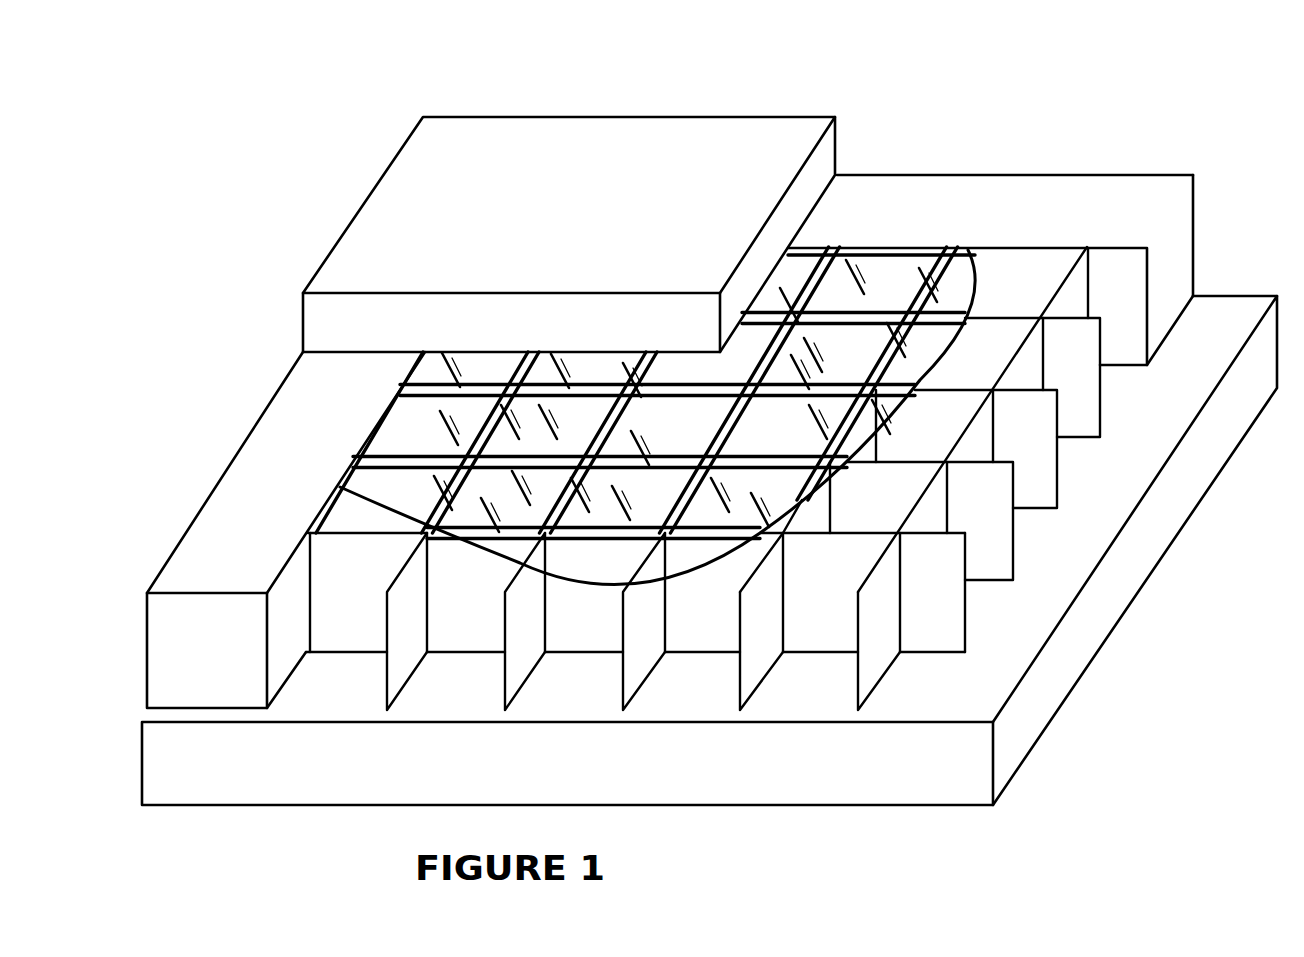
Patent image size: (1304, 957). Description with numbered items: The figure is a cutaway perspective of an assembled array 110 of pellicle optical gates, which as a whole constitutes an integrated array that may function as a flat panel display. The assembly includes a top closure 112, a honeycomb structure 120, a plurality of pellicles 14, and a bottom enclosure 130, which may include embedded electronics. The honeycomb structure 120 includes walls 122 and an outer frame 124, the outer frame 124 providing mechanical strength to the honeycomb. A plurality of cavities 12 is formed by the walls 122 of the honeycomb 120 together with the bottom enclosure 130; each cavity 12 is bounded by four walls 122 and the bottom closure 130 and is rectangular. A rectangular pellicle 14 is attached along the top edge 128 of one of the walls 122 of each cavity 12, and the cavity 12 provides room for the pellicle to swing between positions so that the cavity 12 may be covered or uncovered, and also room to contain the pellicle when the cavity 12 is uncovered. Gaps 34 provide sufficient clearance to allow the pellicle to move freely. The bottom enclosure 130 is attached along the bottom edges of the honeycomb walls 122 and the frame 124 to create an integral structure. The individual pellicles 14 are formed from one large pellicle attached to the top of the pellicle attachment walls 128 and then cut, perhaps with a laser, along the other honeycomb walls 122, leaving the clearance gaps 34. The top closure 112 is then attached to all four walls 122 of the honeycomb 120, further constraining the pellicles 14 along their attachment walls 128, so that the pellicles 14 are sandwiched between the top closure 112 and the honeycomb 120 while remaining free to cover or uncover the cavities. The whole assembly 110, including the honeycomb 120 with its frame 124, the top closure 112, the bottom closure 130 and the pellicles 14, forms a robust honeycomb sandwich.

The assembled array 110 is at (308, 80).
The top closure 112 is at (665, 140).
The honeycomb structure 120 is at (243, 447).
The walls 122 is at (927, 508).
The outer frame 124 is at (243, 513).
The top edge of wall (pellicle attachment wall) 128 is at (843, 350).
The bottom enclosure 130 is at (1043, 176).
The cavities 12 is at (700, 632).
The pellicles 14 is at (837, 280).
The gaps 34 is at (963, 243).